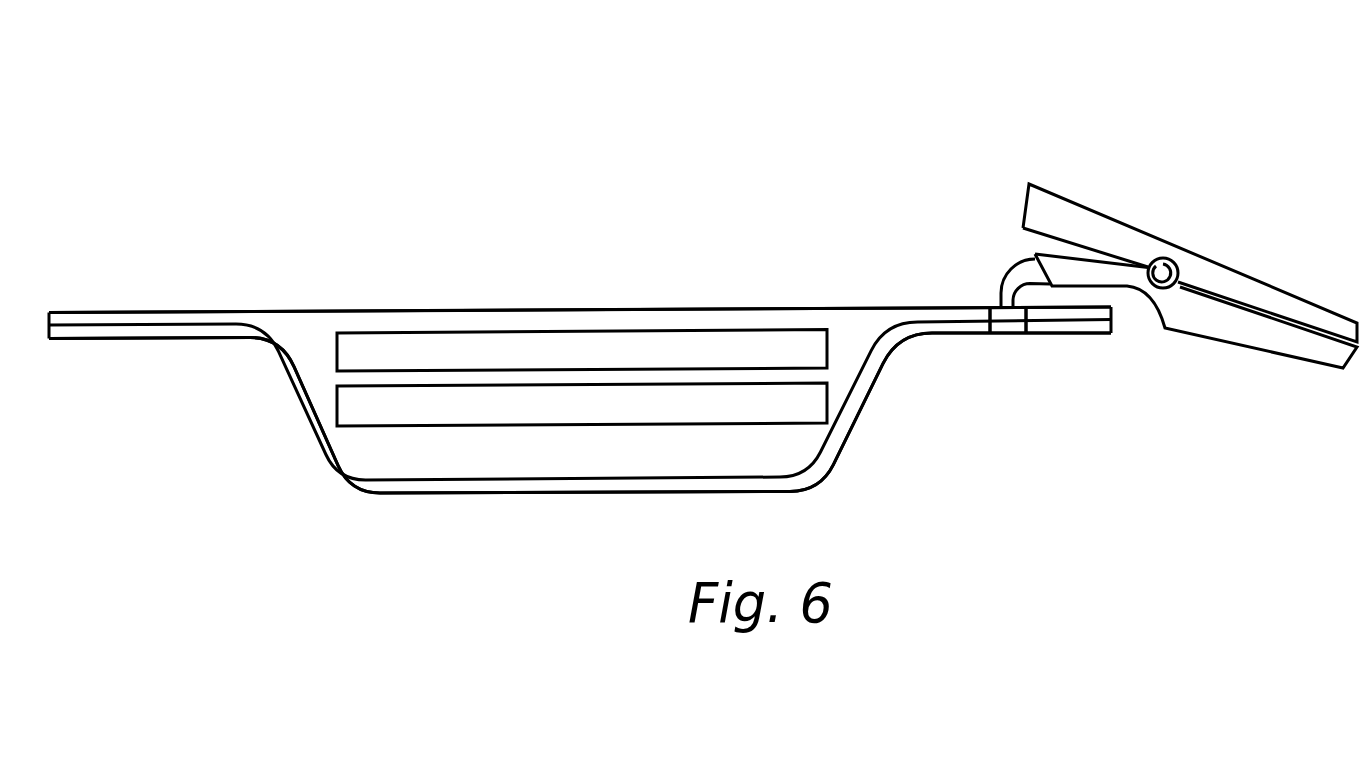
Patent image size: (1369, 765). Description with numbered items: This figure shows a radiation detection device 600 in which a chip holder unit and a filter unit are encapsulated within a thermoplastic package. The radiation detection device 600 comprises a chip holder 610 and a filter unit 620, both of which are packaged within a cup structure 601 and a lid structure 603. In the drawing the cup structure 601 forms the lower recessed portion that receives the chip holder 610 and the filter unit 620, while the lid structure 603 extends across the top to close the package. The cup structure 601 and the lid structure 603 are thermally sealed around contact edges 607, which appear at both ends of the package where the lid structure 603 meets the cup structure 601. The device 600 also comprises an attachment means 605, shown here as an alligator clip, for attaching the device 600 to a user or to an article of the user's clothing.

The radiation detection device 600 is at (170, 130).
The cup structure 601 is at (333, 473).
The lid structure 603 is at (385, 318).
The attachment means 605 is at (1197, 253).
The contact edges 607 is at (163, 311).
The chip holder 610 is at (532, 403).
The filter unit 620 is at (577, 355).